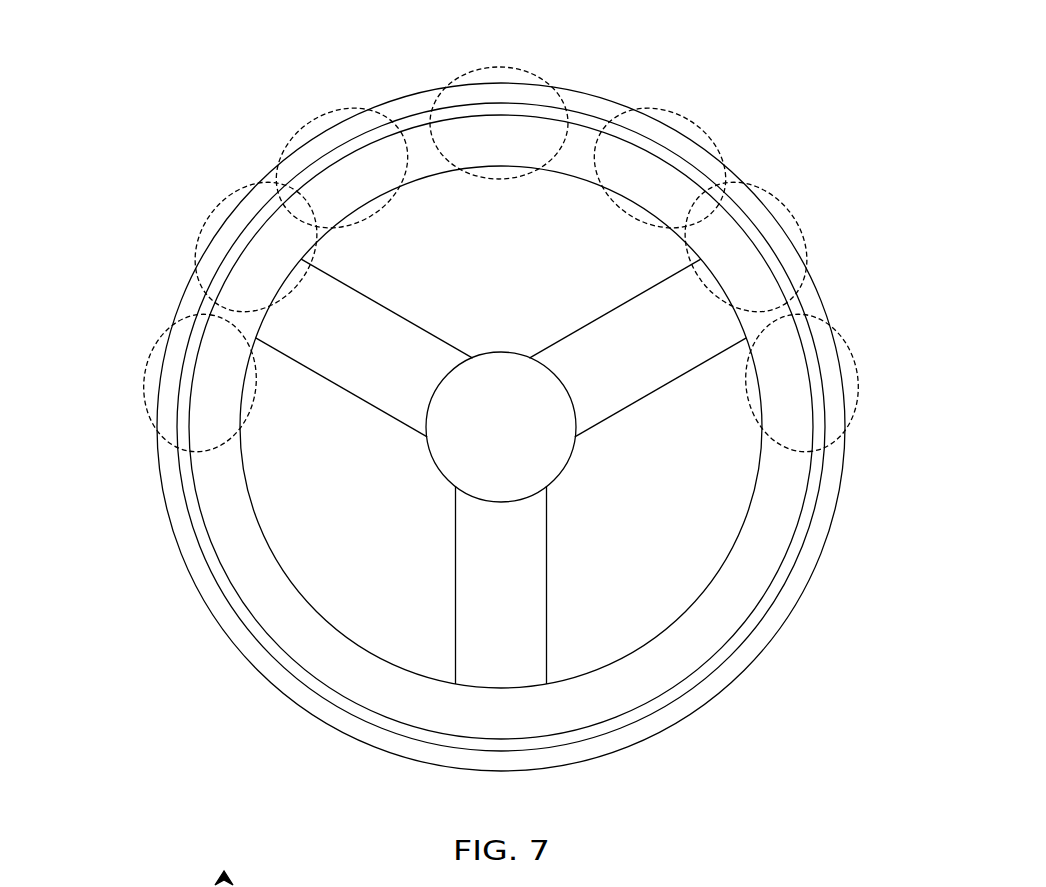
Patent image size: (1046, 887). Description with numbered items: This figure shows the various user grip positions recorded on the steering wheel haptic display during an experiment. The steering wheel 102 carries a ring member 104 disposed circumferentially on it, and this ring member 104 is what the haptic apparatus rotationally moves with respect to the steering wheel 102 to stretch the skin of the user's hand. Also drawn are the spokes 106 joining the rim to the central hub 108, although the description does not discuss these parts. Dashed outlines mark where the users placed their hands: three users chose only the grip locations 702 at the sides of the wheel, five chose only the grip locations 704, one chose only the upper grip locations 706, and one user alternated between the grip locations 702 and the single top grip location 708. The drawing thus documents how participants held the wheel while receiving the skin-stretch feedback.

The steering wheel 102 is at (521, 726).
The ring member 104 is at (763, 605).
The spoke 106 is at (381, 362).
The hub 108 is at (522, 442).
The grip locations 702 is at (148, 400).
The grip locations 704 is at (197, 248).
The grip locations 706 is at (299, 143).
The grip location 708 is at (488, 68).